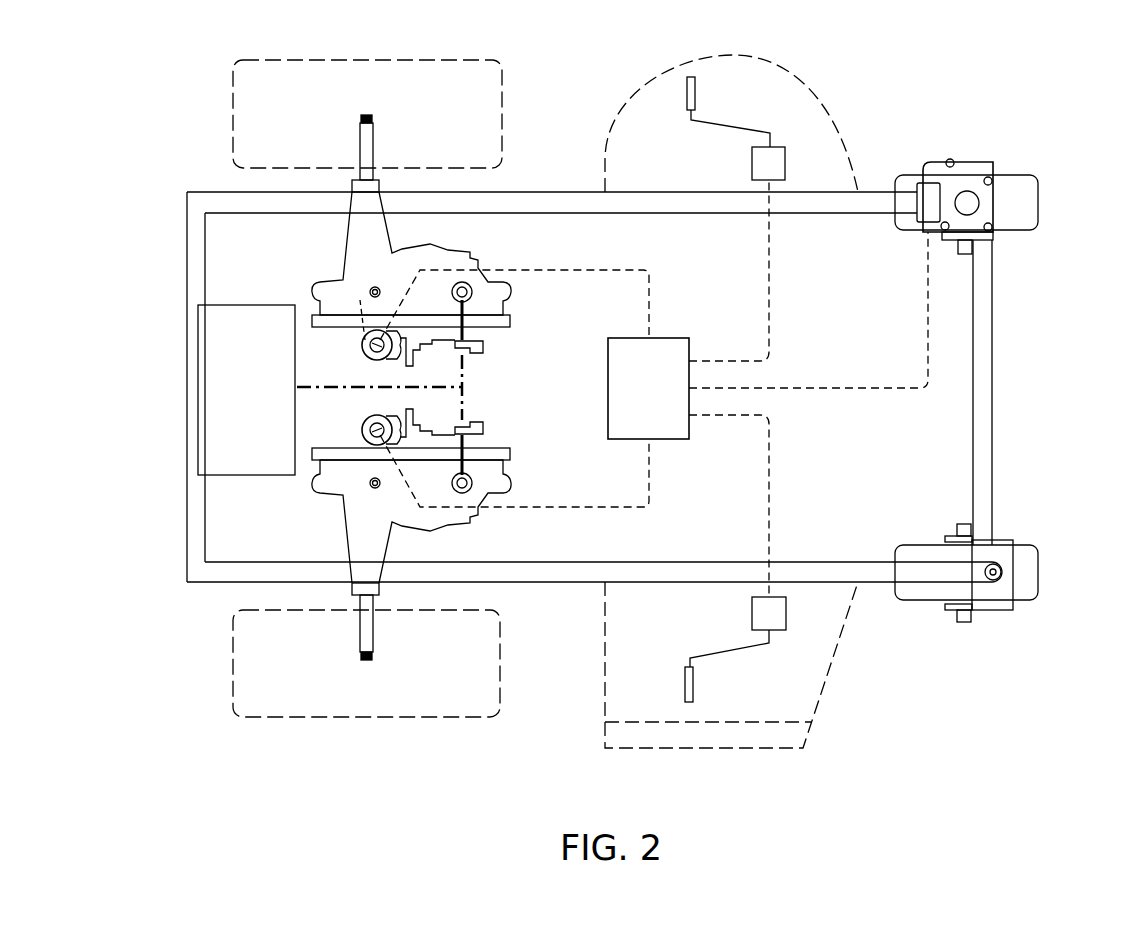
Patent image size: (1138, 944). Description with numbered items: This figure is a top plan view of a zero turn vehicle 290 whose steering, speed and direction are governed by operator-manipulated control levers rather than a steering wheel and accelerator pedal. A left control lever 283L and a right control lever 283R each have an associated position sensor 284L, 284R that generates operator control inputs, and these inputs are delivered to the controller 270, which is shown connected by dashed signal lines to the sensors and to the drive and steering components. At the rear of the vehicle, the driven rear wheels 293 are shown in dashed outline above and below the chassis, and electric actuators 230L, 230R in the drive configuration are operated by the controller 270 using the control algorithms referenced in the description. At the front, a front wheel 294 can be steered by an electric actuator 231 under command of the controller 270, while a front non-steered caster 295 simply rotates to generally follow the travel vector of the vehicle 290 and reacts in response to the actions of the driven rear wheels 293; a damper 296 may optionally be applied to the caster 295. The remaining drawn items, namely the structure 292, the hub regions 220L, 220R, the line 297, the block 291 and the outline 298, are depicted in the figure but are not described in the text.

The zero turn vehicle 290 is at (90, 95).
The frame 292 is at (567, 191).
The driven rear wheels 293 is at (428, 60).
The left wheel hub 220L is at (343, 249).
The right wheel hub 220R is at (340, 530).
The electric actuator 230L is at (364, 341).
The electric actuator 230R is at (364, 430).
The sensor axis 297 is at (306, 387).
The battery compartment 291 is at (270, 452).
The controller 270 is at (671, 401).
The footrest platform 298 is at (727, 57).
The control lever 283L is at (713, 124).
The position sensor 284L is at (752, 165).
The control lever 283R is at (714, 656).
The position sensor 284R is at (752, 614).
The electric actuator 231 is at (962, 174).
The front wheel 294 is at (1040, 205).
The front non-steered caster 295 is at (1040, 573).
The damper 296 is at (996, 580).